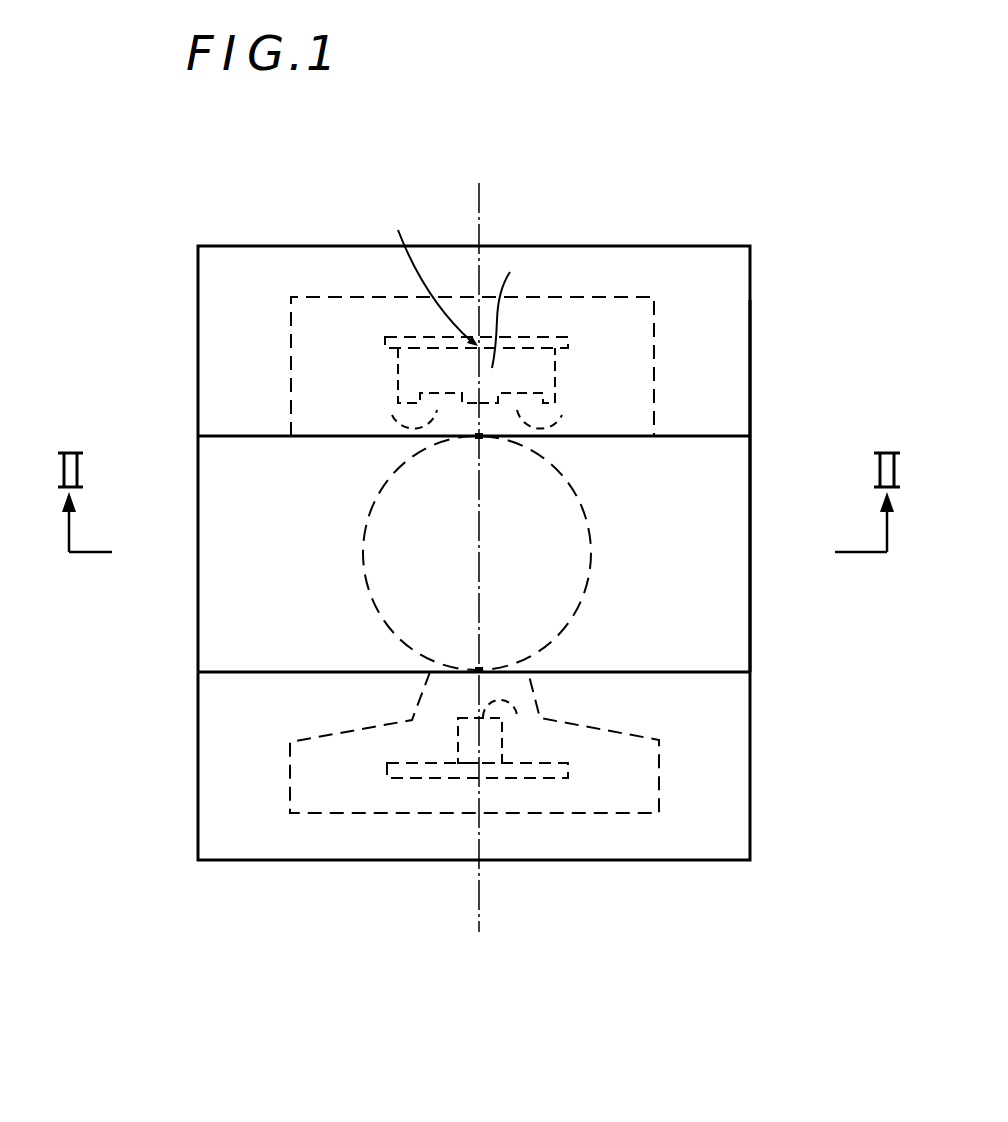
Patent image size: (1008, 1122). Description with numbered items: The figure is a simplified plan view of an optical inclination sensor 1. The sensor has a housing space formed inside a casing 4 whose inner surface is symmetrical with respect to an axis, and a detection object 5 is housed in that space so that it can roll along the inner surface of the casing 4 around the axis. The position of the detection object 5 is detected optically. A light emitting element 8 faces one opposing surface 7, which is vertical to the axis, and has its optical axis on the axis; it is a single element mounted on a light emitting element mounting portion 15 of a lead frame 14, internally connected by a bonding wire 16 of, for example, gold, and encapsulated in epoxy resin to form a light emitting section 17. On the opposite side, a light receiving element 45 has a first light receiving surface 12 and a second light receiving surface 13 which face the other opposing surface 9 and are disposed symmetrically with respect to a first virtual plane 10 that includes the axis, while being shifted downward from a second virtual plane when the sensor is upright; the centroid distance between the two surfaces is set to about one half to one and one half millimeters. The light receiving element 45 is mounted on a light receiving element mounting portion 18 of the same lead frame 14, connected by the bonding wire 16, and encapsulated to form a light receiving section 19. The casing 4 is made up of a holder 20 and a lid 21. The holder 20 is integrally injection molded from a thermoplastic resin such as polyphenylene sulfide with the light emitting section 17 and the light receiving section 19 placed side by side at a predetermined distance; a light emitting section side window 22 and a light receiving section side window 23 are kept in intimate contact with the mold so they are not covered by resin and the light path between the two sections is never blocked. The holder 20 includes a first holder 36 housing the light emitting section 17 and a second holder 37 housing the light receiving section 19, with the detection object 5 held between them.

The optical inclination sensor 1 is at (734, 180).
The casing 4 is at (836, 372).
The detection object 5 is at (572, 557).
The one opposing surface 7 is at (350, 672).
The light emitting element 8 is at (466, 746).
The other opposing surface 9 is at (315, 437).
The first virtual plane 10 is at (480, 220).
The first light receiving surface 12 is at (437, 393).
The second light receiving surface 13 is at (520, 396).
The lead frame 14 is at (566, 344).
The light emitting element mounting portion 15 is at (472, 772).
The bonding wire 16 is at (400, 437).
The light emitting section 17 is at (645, 768).
The light receiving element mounting portion 18 is at (428, 267).
The light receiving section 19 is at (635, 358).
The holder 20 is at (750, 390).
The lid 21 is at (728, 482).
The light emitting section side window 22 is at (449, 670).
The light receiving section side window 23 is at (447, 437).
The first holder 36 is at (736, 812).
The second holder 37 is at (733, 281).
The light receiving element 45 is at (525, 309).